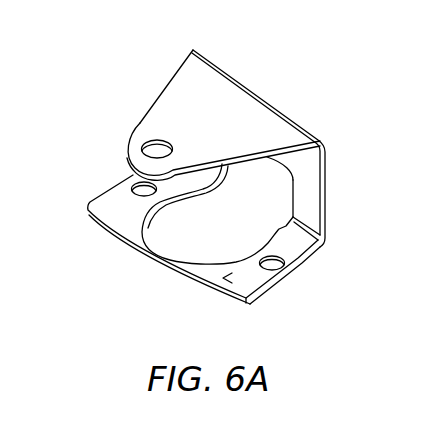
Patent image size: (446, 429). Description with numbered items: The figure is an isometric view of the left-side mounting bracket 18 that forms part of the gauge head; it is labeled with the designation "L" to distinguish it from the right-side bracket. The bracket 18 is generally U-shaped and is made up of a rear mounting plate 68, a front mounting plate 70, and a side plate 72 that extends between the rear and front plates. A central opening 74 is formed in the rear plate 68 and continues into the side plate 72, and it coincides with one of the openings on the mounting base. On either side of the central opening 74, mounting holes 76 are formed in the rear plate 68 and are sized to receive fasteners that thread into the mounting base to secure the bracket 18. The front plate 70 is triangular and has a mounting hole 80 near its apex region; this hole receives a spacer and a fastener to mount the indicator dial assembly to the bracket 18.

The bracket 18 is at (213, 188).
The front mounting plate 70 is at (195, 143).
The mounting hole 80 is at (157, 140).
The side plate 72 is at (314, 187).
The central opening 74 is at (205, 239).
The rear mounting plate 68 is at (268, 261).
The mounting holes 76 is at (133, 186).